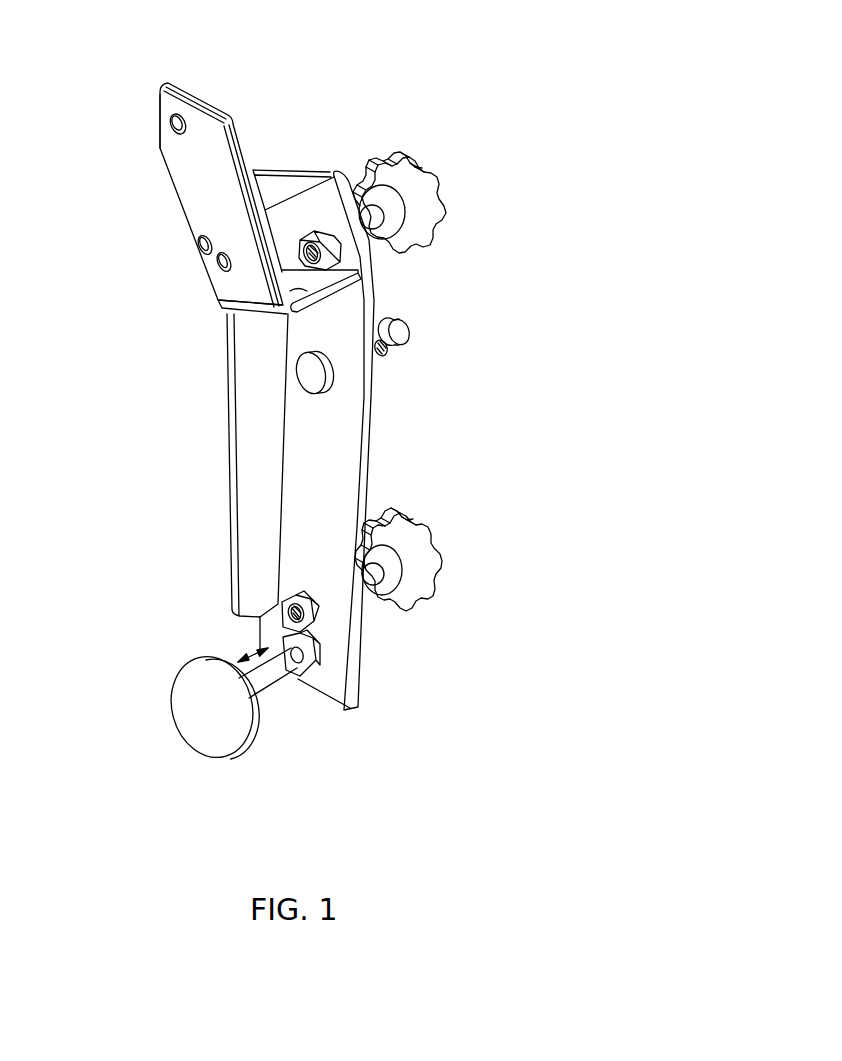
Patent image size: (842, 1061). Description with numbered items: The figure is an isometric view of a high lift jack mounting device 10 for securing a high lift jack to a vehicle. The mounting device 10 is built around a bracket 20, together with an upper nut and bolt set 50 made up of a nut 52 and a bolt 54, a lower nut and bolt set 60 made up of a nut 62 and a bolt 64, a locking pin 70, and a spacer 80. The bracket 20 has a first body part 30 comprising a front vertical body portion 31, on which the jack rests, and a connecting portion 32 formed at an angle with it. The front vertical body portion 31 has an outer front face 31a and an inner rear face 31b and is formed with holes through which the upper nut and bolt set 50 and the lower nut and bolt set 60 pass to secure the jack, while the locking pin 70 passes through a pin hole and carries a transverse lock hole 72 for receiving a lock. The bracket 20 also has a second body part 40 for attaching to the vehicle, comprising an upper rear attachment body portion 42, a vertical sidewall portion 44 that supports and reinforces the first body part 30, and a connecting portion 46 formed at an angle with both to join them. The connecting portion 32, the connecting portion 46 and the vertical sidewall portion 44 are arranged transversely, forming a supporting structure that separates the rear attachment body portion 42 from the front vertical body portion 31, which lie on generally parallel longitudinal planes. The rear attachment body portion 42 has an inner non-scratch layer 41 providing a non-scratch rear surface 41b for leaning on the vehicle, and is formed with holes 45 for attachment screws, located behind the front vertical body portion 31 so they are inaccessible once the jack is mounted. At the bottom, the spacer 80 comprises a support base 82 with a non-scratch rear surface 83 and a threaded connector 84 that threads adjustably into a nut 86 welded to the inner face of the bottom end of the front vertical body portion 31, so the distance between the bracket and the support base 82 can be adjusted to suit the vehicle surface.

The high lift jack mounting device 10 is at (466, 38).
The bracket 20 is at (218, 527).
The first body part 30 is at (382, 490).
The front vertical body portion 31 is at (338, 428).
The front face 31a is at (372, 393).
The rear face 31b is at (331, 455).
The connecting portion 32 is at (280, 183).
The second body part 40 is at (212, 310).
The inner non-scratch layer 41 is at (182, 206).
The non-scratch rear surface 41b is at (201, 208).
The rear attachment body portion 42 is at (163, 165).
The vertical sidewall portion 44 is at (252, 442).
The holes 45 is at (171, 121).
The connecting portion 46 is at (296, 290).
The upper nut and bolt set 50 is at (426, 146).
The nut 52 is at (314, 232).
The bolt 54 is at (425, 172).
The lower nut and bolt set 60 is at (458, 580).
The nut 62 is at (312, 622).
The bolt 64 is at (425, 560).
The locking pin 70 is at (407, 331).
The lock hole 72 is at (384, 349).
The spacer 80 is at (270, 718).
The support base 82 is at (251, 735).
The non-scratch rear surface 83 is at (194, 712).
The threaded connector 84 is at (271, 674).
The nut 86 is at (318, 667).